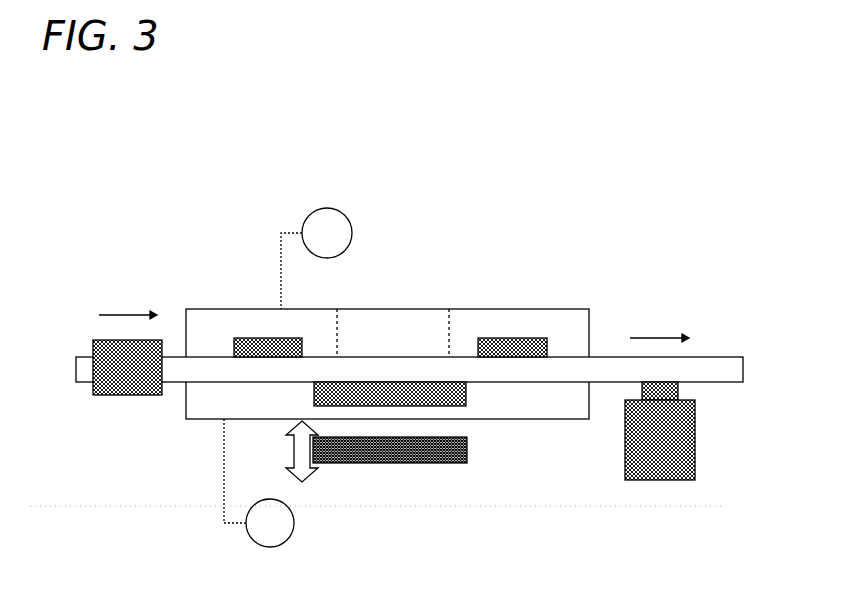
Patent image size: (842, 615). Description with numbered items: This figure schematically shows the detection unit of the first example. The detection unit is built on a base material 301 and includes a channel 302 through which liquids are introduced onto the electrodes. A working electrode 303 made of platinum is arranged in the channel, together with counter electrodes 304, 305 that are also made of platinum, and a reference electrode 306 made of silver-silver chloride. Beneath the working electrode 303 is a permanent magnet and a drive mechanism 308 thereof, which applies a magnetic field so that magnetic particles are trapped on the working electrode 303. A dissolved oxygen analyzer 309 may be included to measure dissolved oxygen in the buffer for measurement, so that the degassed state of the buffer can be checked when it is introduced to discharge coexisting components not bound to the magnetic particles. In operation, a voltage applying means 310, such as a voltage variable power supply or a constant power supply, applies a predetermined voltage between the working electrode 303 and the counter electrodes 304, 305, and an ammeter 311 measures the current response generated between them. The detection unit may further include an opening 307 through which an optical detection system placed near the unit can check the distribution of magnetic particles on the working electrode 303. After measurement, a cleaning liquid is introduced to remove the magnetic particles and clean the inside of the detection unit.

The base material 301 is at (196, 309).
The channel 302 is at (613, 370).
The working electrode 303 is at (463, 395).
The counter electrode 304 is at (258, 338).
The counter electrode 305 is at (507, 338).
The reference electrode 306 is at (673, 460).
The opening 307 is at (422, 317).
The permanent magnet and drive mechanism 308 is at (467, 460).
The dissolved oxygen analyzer 309 is at (140, 387).
The voltage applying means 310 is at (293, 520).
The ammeter 311 is at (332, 209).